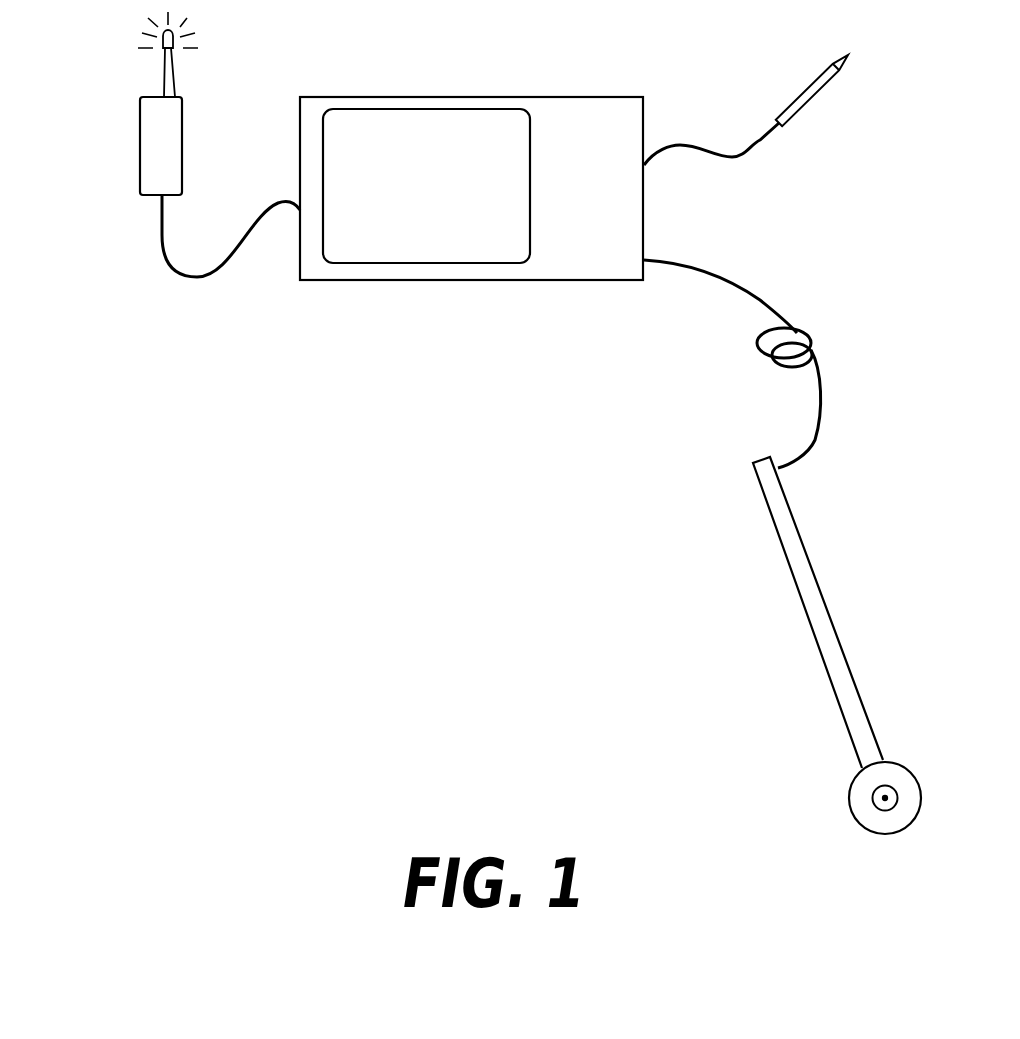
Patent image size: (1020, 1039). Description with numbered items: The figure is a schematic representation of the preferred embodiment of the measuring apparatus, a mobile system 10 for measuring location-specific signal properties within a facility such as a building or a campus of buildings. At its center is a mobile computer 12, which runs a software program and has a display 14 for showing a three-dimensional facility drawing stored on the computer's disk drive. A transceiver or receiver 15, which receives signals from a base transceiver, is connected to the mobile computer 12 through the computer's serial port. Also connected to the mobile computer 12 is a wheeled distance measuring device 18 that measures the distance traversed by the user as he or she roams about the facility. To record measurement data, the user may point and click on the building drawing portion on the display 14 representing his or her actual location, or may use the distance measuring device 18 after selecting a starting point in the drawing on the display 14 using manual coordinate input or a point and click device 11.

The mobile system 10 is at (506, 433).
The point and click device 11 is at (803, 108).
The mobile computer 12 is at (605, 170).
The display 14 is at (378, 125).
The transceiver or receiver 15 is at (147, 97).
The wheeled distance measuring device 18 is at (793, 577).